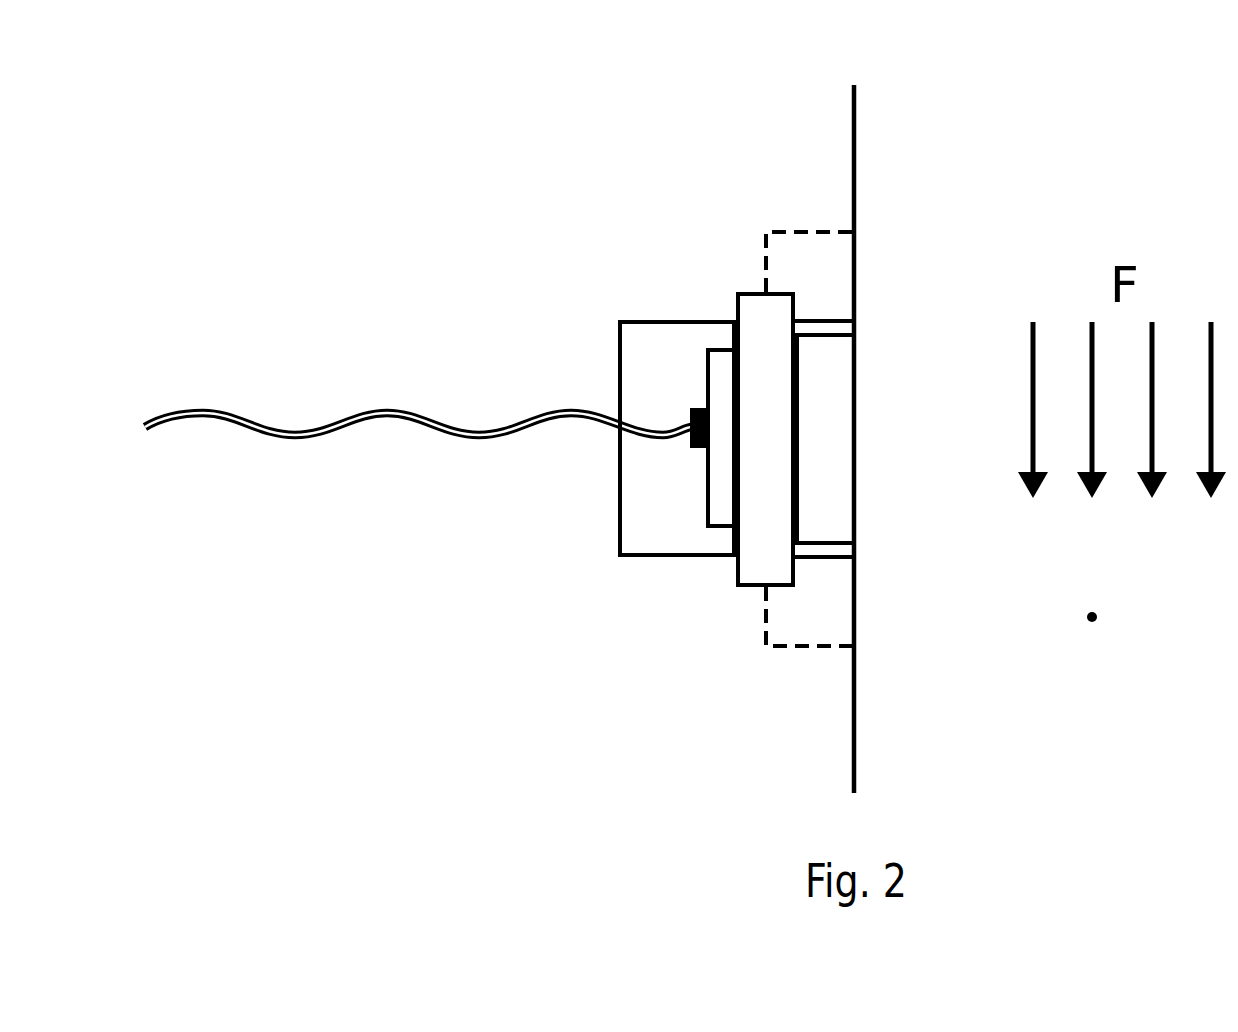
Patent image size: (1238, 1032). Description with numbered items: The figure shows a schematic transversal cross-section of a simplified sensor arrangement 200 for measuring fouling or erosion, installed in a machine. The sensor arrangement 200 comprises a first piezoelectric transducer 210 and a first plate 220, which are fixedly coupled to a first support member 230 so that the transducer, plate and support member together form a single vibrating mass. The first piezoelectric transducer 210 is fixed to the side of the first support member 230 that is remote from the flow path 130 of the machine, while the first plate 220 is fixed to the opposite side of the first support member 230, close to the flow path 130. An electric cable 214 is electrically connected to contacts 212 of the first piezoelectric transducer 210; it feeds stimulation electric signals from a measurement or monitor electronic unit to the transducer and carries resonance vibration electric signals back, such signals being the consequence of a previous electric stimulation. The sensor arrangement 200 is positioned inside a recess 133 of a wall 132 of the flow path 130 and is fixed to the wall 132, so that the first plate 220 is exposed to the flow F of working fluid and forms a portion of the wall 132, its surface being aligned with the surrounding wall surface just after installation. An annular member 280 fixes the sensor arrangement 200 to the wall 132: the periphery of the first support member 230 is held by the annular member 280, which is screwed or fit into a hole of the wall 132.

The flow path 130 is at (1170, 634).
The wall 132 is at (842, 140).
The recess 133 is at (670, 368).
The sensor arrangement 200 is at (660, 140).
The first piezoelectric transducer 210 is at (722, 480).
The contacts 212 is at (690, 412).
The electric cable 214 is at (307, 433).
The first plate 220 is at (842, 503).
The first support member 230 is at (767, 384).
The annular member 280 is at (842, 267).